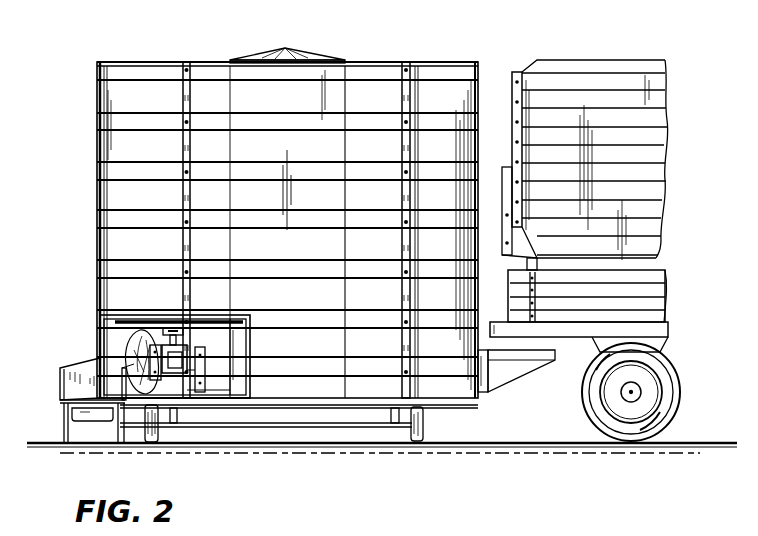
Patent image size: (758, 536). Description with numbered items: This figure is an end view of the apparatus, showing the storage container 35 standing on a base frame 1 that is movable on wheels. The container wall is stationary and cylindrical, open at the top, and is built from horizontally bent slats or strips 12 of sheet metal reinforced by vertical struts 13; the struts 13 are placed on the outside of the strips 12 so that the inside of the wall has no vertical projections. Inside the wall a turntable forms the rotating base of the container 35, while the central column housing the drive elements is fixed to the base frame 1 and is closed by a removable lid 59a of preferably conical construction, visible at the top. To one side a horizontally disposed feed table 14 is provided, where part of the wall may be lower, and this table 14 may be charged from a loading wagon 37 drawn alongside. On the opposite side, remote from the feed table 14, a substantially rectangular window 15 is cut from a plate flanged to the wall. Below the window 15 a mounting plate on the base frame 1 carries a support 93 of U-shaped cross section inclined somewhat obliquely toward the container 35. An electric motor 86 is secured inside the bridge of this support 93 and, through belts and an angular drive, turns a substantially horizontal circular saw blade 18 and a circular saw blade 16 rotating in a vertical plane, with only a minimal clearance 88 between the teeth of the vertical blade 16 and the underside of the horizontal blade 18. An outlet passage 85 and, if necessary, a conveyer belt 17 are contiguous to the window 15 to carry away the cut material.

The base frame 1 is at (293, 404).
The sheet metal strips 12 is at (347, 118).
The vertical struts 13 is at (186, 97).
The feed table 14 is at (514, 372).
The window 15 is at (113, 332).
The circular saw blade 16 is at (140, 351).
The conveyer belt 17 is at (92, 414).
The circular saw blade 18 is at (222, 321).
The storage container 35 is at (165, 56).
The loading wagon 37 is at (612, 58).
The removable lid 59a is at (290, 50).
The outlet passage 85 is at (77, 383).
The electric motor 86 is at (184, 355).
The clearance 88 is at (152, 323).
The support 93 is at (203, 382).